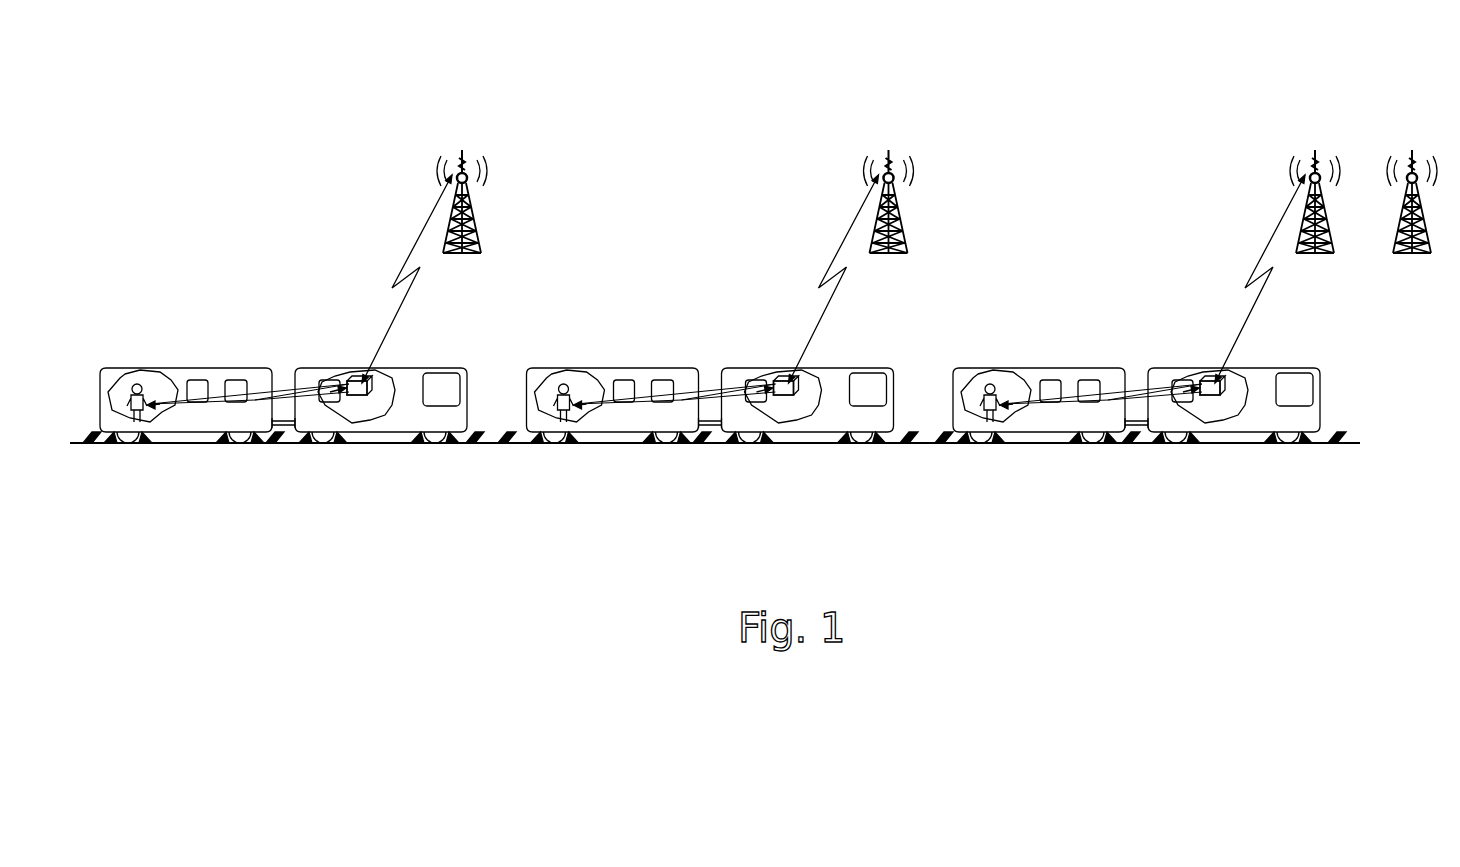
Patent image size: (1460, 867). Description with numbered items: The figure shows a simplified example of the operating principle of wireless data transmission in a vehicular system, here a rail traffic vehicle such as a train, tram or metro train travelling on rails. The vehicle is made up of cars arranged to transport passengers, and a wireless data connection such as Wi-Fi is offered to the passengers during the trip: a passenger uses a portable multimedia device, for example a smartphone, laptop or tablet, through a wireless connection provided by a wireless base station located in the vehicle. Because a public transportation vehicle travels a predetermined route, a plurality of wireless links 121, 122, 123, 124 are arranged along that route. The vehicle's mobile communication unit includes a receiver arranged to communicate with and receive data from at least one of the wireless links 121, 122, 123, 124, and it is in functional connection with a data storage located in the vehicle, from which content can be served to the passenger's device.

The wireless link 121 is at (465, 150).
The wireless link 122 is at (892, 165).
The wireless link 123 is at (1318, 165).
The wireless link 124 is at (1419, 165).